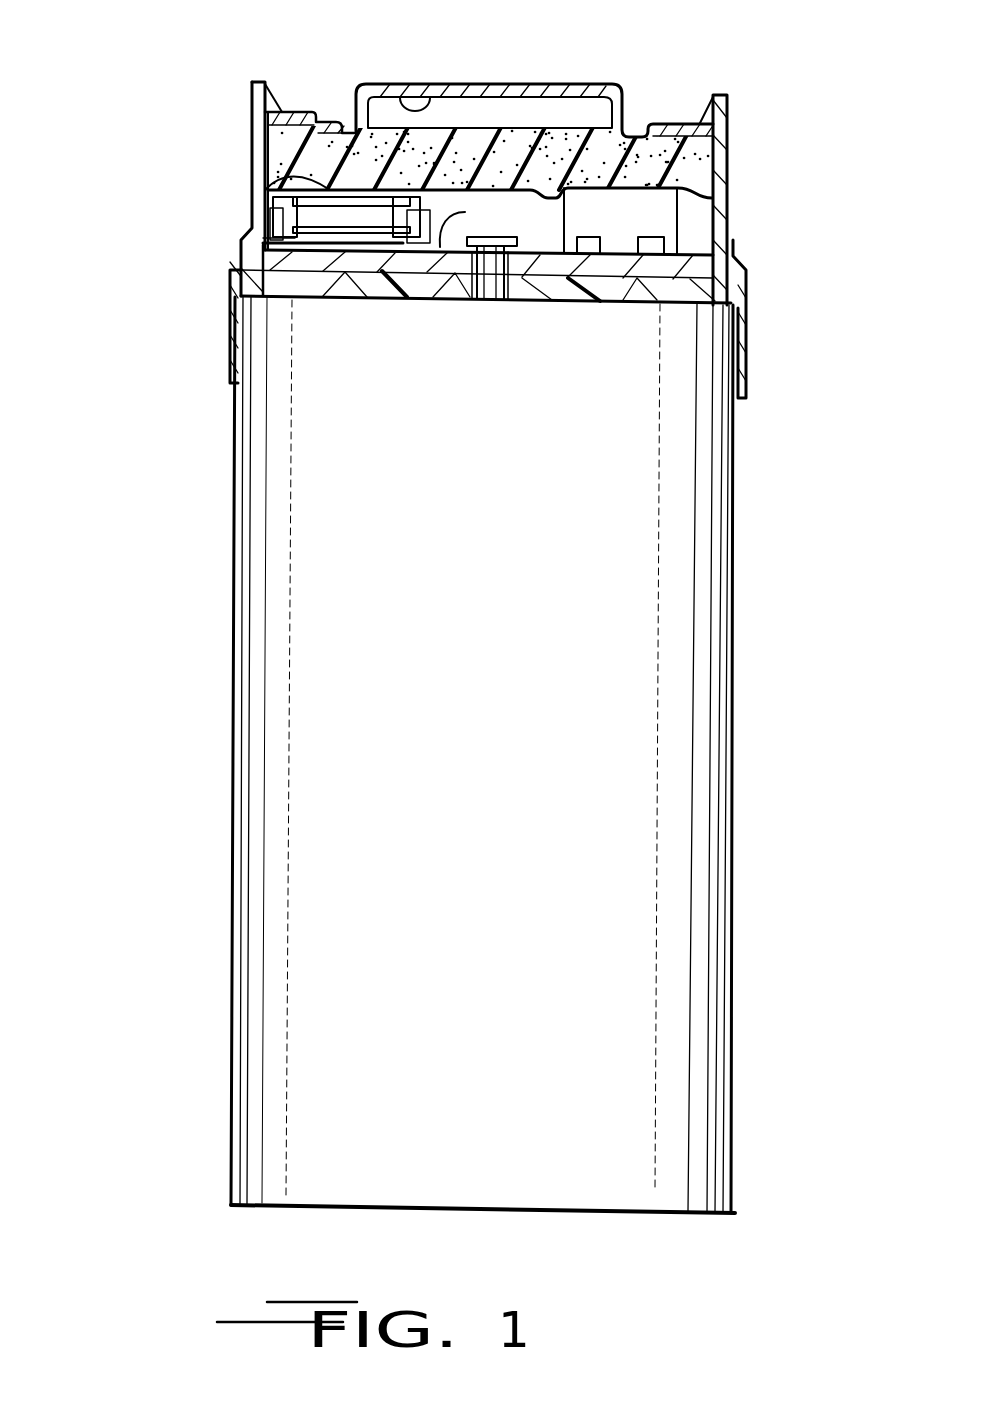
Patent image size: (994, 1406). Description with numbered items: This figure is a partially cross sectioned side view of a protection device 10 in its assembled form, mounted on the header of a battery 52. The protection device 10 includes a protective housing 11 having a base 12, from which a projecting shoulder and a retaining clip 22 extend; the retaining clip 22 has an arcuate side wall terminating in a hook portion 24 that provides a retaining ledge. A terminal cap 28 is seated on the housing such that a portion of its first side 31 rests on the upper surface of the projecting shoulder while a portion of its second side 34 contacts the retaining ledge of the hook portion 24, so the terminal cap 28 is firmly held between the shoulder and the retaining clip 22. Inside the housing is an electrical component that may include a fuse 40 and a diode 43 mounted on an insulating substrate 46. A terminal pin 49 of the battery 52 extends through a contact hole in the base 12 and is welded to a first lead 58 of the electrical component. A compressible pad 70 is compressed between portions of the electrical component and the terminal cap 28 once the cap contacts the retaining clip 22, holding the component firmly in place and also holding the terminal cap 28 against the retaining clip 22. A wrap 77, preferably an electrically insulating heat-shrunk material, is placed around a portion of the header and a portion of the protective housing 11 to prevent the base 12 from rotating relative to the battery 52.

The protection device 10 is at (200, 268).
The protective housing 11 is at (758, 148).
The base 12 is at (486, 315).
The retaining clip 22 is at (262, 97).
The hook portion 24 is at (270, 103).
The terminal cap 28 is at (534, 69).
The first side 31 is at (430, 102).
The second side 34 is at (492, 95).
The fuse 40 is at (328, 213).
The diode 43 is at (600, 229).
The insulating substrate 46 is at (552, 268).
The terminal pin 49 is at (487, 290).
The battery 52 is at (487, 694).
The first lead 58 is at (455, 245).
The compressible pad 70 is at (724, 140).
The wrap 77 is at (228, 336).